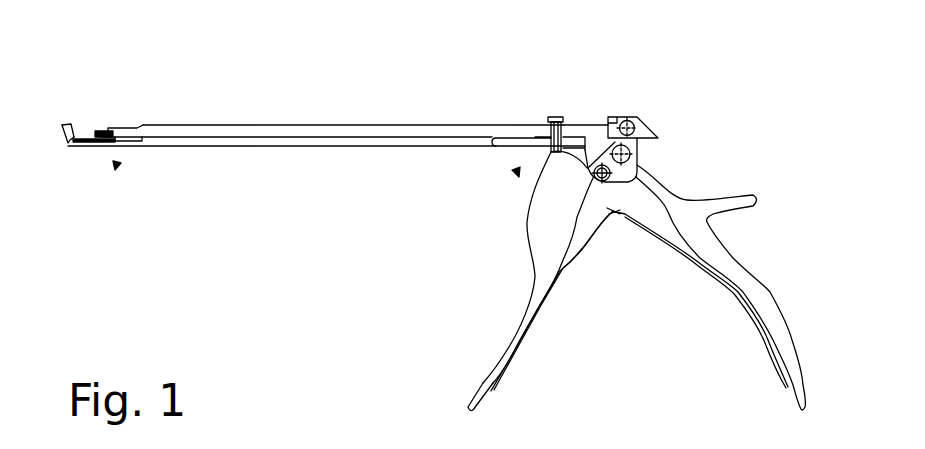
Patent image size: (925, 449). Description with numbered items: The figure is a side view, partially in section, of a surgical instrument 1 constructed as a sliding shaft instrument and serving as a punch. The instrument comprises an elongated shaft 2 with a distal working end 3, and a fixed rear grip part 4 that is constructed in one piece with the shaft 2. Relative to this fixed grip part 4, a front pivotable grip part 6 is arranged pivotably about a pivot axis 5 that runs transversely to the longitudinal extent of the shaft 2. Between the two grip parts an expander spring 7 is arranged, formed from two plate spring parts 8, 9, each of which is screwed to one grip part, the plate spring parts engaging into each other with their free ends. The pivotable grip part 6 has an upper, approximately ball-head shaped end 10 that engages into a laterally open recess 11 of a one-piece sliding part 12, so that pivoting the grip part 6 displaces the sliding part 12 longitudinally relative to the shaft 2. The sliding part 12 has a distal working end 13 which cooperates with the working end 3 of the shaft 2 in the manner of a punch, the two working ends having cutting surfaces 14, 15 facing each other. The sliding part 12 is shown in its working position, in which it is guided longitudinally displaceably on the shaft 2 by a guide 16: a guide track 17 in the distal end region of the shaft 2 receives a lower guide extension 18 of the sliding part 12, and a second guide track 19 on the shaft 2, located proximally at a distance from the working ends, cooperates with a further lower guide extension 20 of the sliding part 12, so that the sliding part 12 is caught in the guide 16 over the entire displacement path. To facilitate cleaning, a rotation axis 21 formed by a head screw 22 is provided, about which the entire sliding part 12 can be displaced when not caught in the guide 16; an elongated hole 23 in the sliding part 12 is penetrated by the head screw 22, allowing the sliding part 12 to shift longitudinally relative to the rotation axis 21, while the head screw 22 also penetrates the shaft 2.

The surgical instrument 1 is at (804, 238).
The shaft 2 is at (272, 144).
The distal working end 3 is at (63, 138).
The rear grip part 4 is at (770, 293).
The pivot axis 5 is at (632, 168).
The pivotable grip part 6 is at (497, 370).
The expander spring 7 is at (583, 249).
The plate spring part 8 is at (528, 340).
The plate spring part 9 is at (684, 256).
The ball-head shaped end 10 is at (628, 119).
The laterally open recess 11 is at (633, 121).
The sliding part 12 is at (343, 126).
The distal working end 13 is at (117, 129).
The cutting surface 14 is at (73, 126).
The cutting surface 15 is at (110, 131).
The guide 16 is at (118, 168).
The guide track 17 is at (88, 146).
The lower guide extension 18 is at (143, 130).
The guide track 19 is at (498, 146).
The lower guide extension 20 is at (537, 137).
The rotation axis 21 is at (563, 128).
The head screw 22 is at (553, 120).
The elongated hole 23 is at (548, 121).